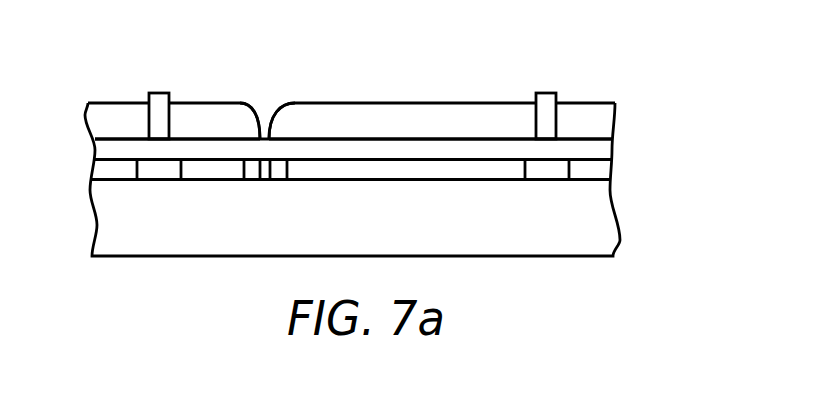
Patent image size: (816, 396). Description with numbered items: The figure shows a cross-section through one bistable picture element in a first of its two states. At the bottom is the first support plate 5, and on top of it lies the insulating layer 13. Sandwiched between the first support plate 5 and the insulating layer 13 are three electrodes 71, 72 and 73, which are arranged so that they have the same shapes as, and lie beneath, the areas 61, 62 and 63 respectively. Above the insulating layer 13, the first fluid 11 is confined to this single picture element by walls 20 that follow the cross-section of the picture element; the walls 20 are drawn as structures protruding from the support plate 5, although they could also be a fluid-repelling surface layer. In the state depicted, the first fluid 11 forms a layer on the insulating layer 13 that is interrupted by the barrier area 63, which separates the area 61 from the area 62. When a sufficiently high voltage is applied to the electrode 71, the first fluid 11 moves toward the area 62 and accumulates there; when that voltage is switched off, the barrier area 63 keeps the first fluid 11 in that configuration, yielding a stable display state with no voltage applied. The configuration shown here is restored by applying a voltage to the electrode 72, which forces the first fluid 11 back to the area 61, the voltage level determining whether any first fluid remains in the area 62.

The first support plate 5 is at (594, 213).
The first fluid 11 is at (450, 118).
The insulating layer 13 is at (603, 149).
The walls 20 is at (548, 105).
The area 61 is at (394, 138).
The area 62 is at (212, 138).
The barrier area 63 is at (265, 138).
The electrode 71 is at (395, 168).
The electrode 72 is at (217, 168).
The electrode 73 is at (263, 170).